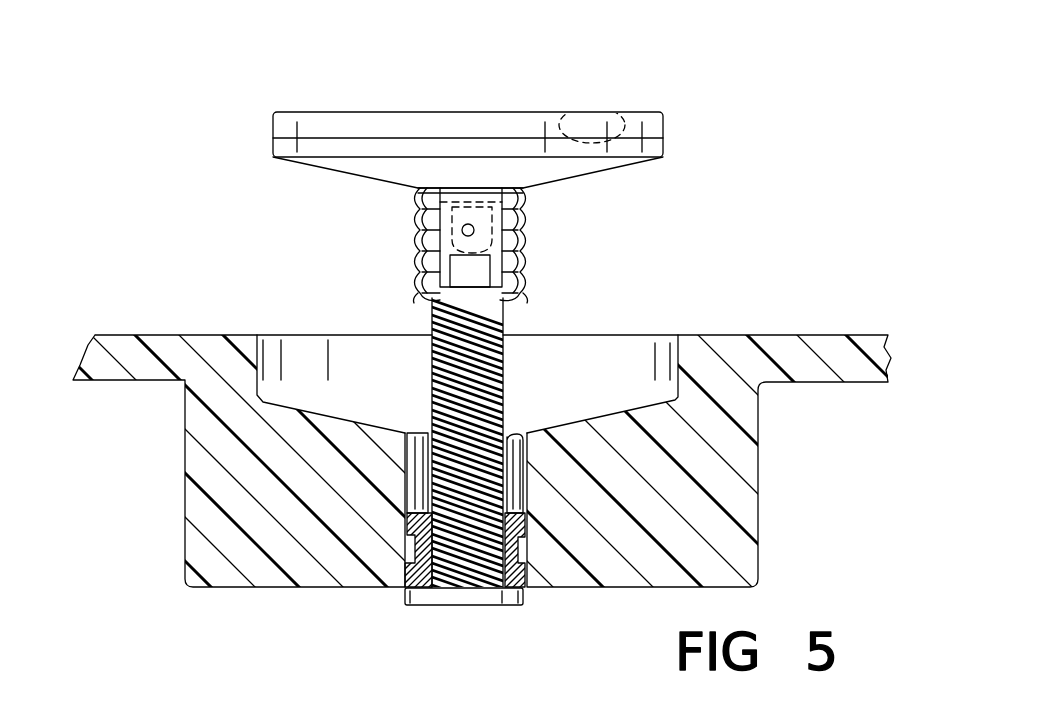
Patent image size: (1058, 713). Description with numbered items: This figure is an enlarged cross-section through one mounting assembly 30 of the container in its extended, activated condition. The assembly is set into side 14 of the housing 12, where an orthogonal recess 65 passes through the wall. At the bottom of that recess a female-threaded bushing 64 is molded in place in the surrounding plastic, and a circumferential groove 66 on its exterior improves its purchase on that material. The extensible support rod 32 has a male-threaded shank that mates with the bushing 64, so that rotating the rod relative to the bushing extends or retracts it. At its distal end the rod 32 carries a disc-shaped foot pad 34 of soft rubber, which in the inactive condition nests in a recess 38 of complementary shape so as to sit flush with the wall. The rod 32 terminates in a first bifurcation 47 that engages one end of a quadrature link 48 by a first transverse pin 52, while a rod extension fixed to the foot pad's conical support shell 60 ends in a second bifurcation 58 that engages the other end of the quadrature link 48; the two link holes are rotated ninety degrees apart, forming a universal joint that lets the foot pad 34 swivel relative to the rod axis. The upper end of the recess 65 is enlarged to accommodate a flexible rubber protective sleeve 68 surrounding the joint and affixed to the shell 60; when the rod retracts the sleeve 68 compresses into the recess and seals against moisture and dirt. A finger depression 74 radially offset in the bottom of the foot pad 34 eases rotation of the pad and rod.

The housing 12 is at (128, 320).
The side 14 is at (813, 335).
The mounting assembly 30 is at (278, 222).
The extensible support rod 32 is at (490, 345).
The foot pad 34 is at (516, 112).
The recess 38 is at (663, 340).
The first bifurcation 47 is at (525, 190).
The quadrature link 48 is at (466, 238).
The first transverse pin 52 is at (493, 237).
The second bifurcation 58 is at (527, 260).
The conical support shell 60 is at (401, 174).
The bushing 64 is at (523, 588).
The recess 65 is at (518, 434).
The circumferential groove 66 is at (400, 550).
The protective sleeve 68 is at (418, 280).
The finger depression 74 is at (580, 134).